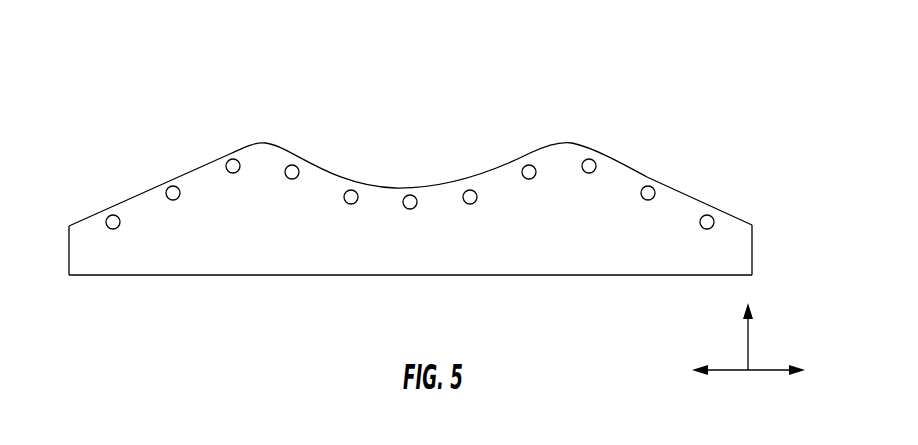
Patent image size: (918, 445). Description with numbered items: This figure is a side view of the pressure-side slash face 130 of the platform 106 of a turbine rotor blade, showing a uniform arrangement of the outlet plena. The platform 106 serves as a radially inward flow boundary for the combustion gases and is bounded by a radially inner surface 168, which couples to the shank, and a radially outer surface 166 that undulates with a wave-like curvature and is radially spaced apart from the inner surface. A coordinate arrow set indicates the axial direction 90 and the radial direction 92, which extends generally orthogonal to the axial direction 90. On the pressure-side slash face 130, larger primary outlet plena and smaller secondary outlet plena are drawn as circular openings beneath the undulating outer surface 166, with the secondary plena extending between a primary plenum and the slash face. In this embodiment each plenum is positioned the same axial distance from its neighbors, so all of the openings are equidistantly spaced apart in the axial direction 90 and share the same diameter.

The platform 106 is at (108, 92).
The pressure-side slash face 130 is at (590, 253).
The radially outer surface 166 is at (425, 187).
The radially inner surface 168 is at (380, 275).
The axial direction 90 is at (731, 372).
The radial direction 92 is at (749, 333).